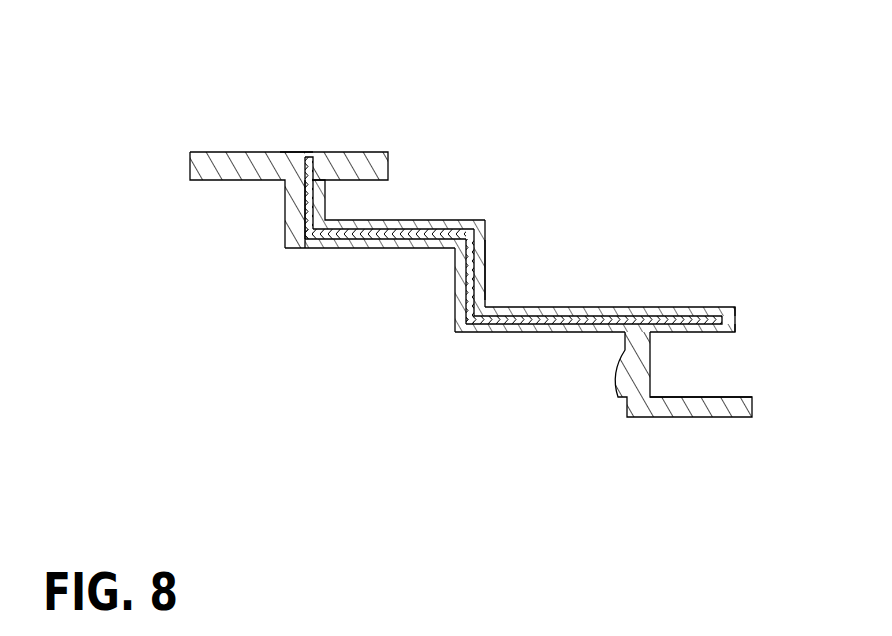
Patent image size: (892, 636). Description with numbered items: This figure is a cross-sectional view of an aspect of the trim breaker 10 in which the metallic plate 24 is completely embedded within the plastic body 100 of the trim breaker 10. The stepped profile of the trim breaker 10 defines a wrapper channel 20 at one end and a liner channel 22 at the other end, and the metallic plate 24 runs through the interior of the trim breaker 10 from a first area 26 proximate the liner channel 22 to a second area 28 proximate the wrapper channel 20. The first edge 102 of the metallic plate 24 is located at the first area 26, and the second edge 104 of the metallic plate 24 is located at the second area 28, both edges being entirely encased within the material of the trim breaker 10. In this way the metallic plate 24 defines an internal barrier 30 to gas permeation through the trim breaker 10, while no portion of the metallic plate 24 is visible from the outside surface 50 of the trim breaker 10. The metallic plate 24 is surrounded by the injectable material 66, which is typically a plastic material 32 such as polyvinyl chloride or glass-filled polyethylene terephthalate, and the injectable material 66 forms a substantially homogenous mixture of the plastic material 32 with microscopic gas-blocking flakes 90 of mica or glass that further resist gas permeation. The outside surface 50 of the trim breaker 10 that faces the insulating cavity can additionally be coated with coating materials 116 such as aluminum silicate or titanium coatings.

The trim breaker 10 is at (356, 104).
The wrapper channel 20 is at (372, 197).
The liner channel 22 is at (680, 362).
The metallic plate 24 is at (362, 242).
The first area 26 is at (707, 301).
The second area 28 is at (296, 160).
The internal barrier 30 is at (496, 331).
The plastic material 32 is at (228, 165).
The outside surface 50 is at (553, 333).
The injectable material 66 is at (476, 220).
The gas-blocking flakes 90 is at (733, 410).
The plastic body 100 is at (280, 233).
The first edge 102 is at (724, 320).
The second edge 104 is at (309, 152).
The coating materials 116 is at (486, 256).